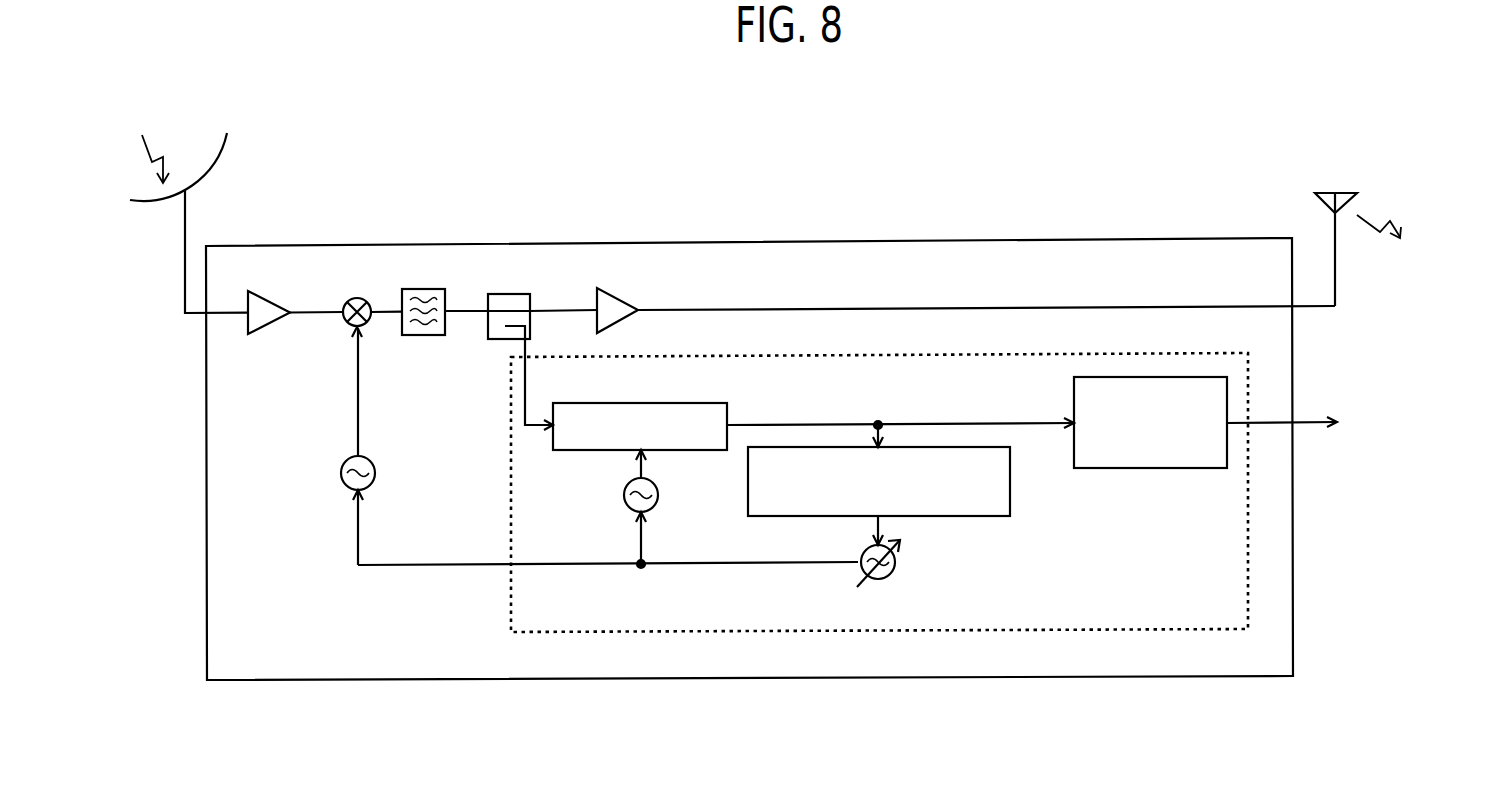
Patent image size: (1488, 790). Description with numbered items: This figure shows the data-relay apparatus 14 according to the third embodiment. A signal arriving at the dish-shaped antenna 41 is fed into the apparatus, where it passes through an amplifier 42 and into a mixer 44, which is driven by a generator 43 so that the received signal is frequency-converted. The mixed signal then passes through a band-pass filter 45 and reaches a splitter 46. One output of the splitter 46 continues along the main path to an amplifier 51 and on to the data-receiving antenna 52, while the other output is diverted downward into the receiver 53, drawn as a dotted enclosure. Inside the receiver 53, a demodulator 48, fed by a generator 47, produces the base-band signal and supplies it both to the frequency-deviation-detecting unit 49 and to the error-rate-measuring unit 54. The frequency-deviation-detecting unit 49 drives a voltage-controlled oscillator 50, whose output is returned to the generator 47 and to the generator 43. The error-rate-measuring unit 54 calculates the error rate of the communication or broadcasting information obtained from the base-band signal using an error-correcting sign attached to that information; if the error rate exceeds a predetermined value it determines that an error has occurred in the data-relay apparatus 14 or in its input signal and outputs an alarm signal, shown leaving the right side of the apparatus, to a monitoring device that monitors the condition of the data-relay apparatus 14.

The data-relay apparatus 14 is at (447, 680).
The receiving antenna 41 is at (219, 163).
The amplifier 42 is at (277, 302).
The generator 43 is at (376, 473).
The mixer 44 is at (357, 298).
The band-pass filter 45 is at (420, 287).
The splitter 46 is at (530, 333).
The generator 47 is at (623, 495).
The demodulator 48 is at (727, 405).
The frequency-deviation-detecting unit 49 is at (1010, 488).
The voltage-controlled oscillator 50 is at (896, 562).
The amplifier 51 is at (622, 297).
The data-receiving antenna 52 is at (1315, 195).
The receiver 53 is at (511, 612).
The error-rate-measuring unit 54 is at (1193, 468).